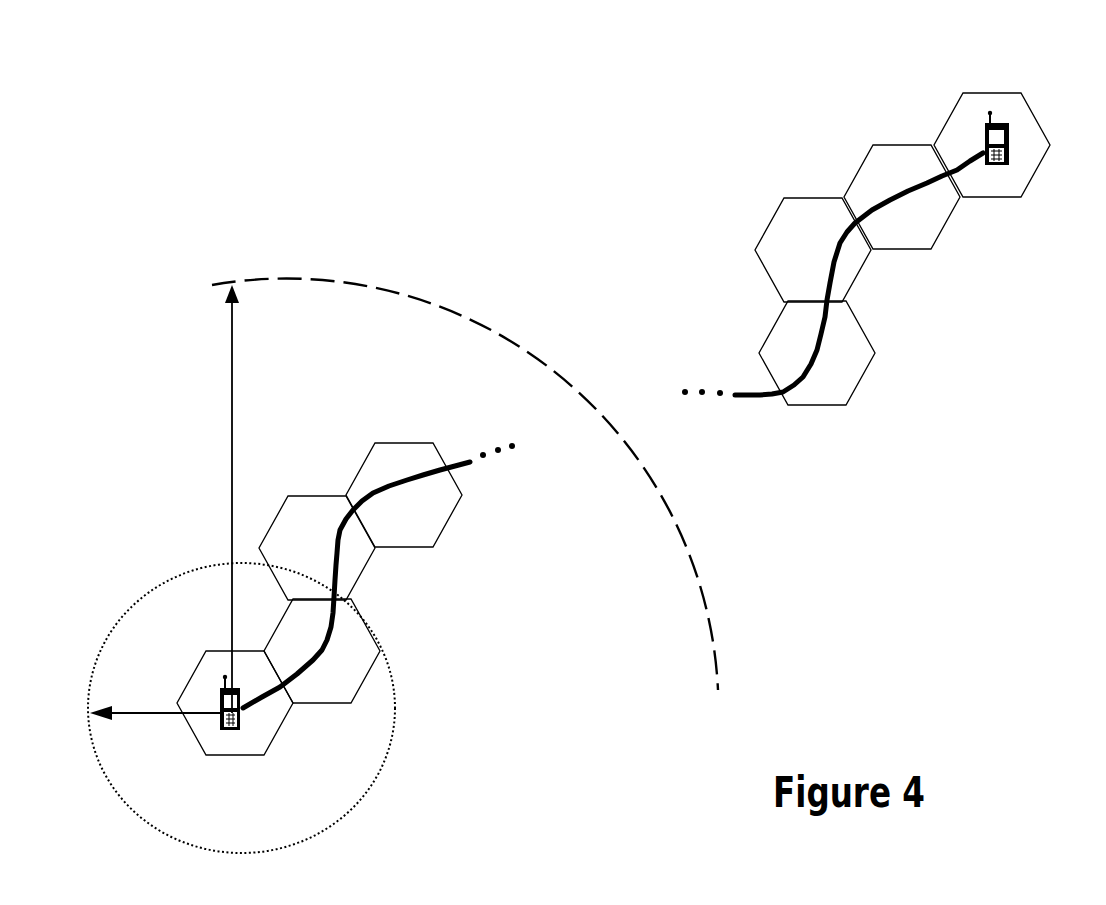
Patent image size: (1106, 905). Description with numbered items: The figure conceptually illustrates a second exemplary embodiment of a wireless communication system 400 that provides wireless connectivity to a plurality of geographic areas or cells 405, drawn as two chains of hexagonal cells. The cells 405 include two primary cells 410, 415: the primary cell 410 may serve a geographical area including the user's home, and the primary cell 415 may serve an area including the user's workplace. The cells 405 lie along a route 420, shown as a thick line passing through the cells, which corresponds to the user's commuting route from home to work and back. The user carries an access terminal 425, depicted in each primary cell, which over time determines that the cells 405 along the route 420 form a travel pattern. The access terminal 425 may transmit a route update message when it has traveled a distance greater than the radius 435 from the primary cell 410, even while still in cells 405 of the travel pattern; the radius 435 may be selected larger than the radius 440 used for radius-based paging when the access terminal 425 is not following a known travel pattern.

The wireless communication system 400 is at (338, 159).
The cells 405 is at (410, 443).
The primary cell 410 is at (215, 755).
The primary cell 415 is at (1000, 93).
The route 420 is at (337, 628).
The access terminal 425 is at (235, 737).
The radius 435 is at (232, 445).
The radius 440 is at (152, 713).